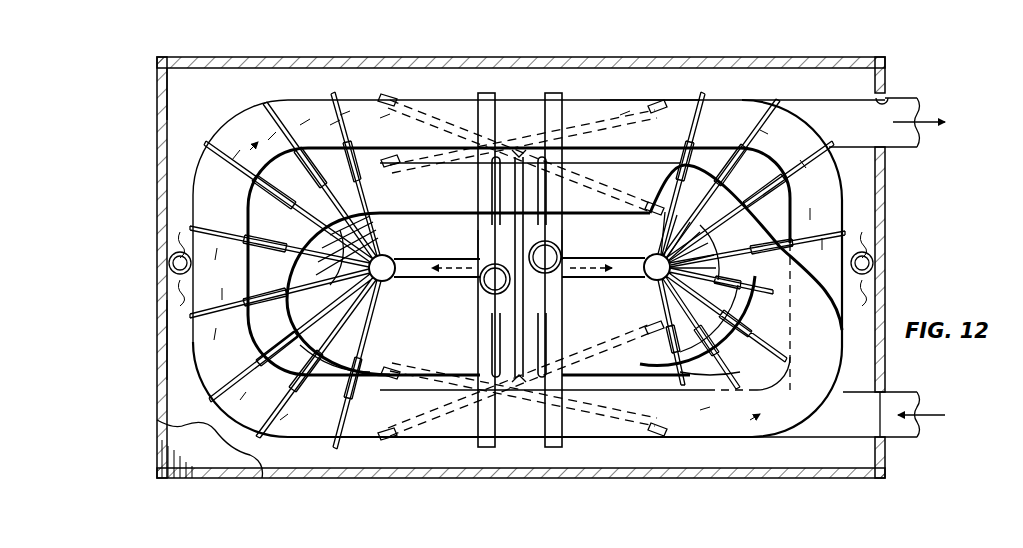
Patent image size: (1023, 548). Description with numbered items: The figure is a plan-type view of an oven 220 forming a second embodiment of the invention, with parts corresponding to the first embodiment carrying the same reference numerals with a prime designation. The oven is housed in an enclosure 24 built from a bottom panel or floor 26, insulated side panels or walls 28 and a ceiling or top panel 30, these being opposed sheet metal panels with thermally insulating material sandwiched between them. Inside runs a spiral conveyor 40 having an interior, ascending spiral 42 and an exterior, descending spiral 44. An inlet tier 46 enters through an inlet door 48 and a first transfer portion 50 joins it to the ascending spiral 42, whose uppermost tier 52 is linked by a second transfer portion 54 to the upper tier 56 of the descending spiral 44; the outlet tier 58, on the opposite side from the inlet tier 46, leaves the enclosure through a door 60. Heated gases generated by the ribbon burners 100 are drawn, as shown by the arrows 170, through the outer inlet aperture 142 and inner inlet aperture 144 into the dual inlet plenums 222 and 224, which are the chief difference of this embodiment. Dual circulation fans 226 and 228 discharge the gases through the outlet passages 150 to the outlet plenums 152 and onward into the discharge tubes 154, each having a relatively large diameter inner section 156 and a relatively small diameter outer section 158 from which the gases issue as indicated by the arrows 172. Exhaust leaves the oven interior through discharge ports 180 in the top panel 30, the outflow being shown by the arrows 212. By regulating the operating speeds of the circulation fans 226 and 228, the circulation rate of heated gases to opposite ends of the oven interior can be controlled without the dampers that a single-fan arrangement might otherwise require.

The oven 220 is at (110, 77).
The enclosure 24 is at (182, 64).
The bottom panel or floor 26 is at (208, 106).
The side panels or walls 28 is at (164, 340).
The ceiling or top panel 30 is at (290, 80).
The conveyor 40 is at (190, 188).
The interior, ascending spiral 42 is at (330, 196).
The exterior, descending spiral 44 is at (645, 98).
The inlet tier 46 is at (862, 424).
The inlet door 48 is at (883, 392).
The first transfer portion 50 is at (280, 284).
The uppermost tier 52 is at (642, 210).
The second transfer portion 54 is at (724, 210).
The upper tier 56 is at (650, 424).
The outlet tier 58 is at (875, 132).
The door 60 is at (888, 100).
The ribbon burners 100 is at (450, 140).
The outer inlet aperture 142 is at (552, 92).
The inner inlet aperture 144 is at (520, 152).
The outlet passages 150 is at (398, 276).
The outlet plenums 152 is at (636, 256).
The discharge tubes 154 is at (370, 238).
The inner section 156 is at (318, 340).
The outer section 158 is at (262, 442).
The arrows 170 is at (546, 50).
The arrows 172 is at (746, 132).
The discharge ports 180 is at (172, 272).
The arrows 212 is at (172, 250).
The inlet plenum 222 is at (486, 245).
The inlet plenum 224 is at (564, 245).
The circulation fan 226 is at (490, 282).
The circulation fan 228 is at (548, 262).